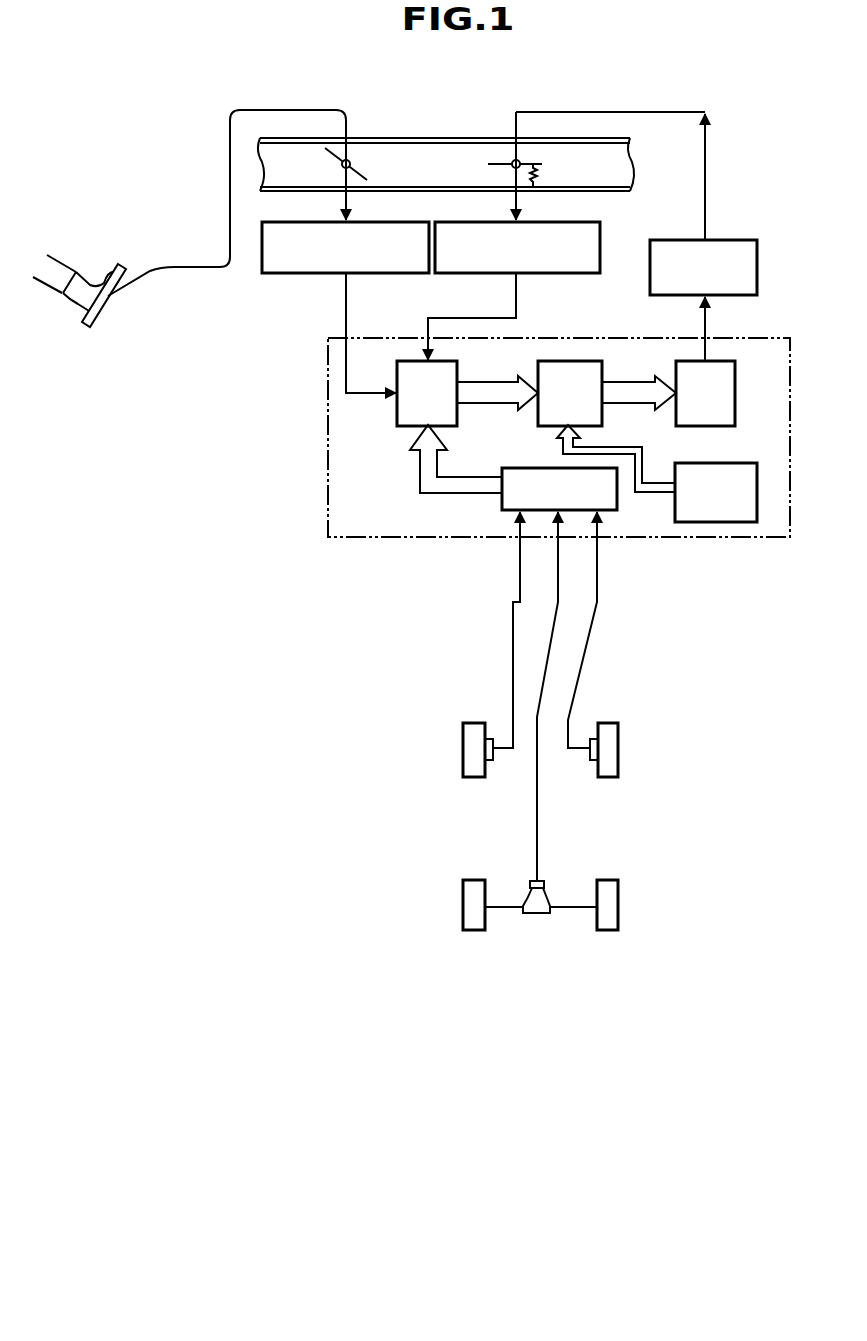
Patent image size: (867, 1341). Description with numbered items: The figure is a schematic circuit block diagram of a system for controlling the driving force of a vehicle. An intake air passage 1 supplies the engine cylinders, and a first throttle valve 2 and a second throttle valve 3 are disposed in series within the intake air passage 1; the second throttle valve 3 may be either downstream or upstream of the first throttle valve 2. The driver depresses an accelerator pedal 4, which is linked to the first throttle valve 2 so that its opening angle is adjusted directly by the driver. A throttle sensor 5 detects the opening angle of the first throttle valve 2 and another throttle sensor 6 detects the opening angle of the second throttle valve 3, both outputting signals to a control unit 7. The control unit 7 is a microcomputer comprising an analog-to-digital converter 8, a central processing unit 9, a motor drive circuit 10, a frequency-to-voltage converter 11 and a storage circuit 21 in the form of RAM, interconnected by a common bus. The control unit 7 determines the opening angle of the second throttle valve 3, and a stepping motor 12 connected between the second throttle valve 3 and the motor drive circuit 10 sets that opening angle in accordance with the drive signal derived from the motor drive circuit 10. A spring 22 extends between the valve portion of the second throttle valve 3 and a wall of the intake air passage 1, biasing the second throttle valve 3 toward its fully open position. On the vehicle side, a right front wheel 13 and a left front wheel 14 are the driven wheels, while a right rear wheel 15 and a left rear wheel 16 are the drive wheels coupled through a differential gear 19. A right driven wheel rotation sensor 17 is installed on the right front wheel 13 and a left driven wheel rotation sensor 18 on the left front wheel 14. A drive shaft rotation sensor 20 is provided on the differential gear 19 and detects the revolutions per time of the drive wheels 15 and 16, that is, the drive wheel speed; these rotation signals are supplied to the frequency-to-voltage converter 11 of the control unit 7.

The intake air passage 1 is at (410, 138).
The first throttle valve 2 is at (357, 172).
The second throttle valve 3 is at (493, 163).
The accelerator pedal 4 is at (122, 266).
The throttle sensor 5 is at (300, 274).
The throttle sensor 6 is at (563, 274).
The control unit 7 is at (356, 540).
The analog-to-digital (A/D) converter 8 is at (397, 426).
The Central Processing Unit (CPU) 9 is at (538, 426).
The motor drive circuit 10 is at (736, 380).
The frequency-to-voltage (F/V) converter 11 is at (502, 512).
The stepping motor 12 is at (737, 240).
The right front wheel 13 is at (618, 752).
The left front wheel 14 is at (463, 750).
The right rear wheel 15 is at (618, 892).
The left rear wheel 16 is at (463, 884).
The right driven wheel rotation sensor 17 is at (594, 739).
The left driven wheel rotation sensor 18 is at (489, 739).
The differential gear 19 is at (535, 913).
The drive shaft rotation sensor 20 is at (545, 880).
The storage circuit (RAM) 21 is at (722, 462).
The spring 22 is at (538, 172).